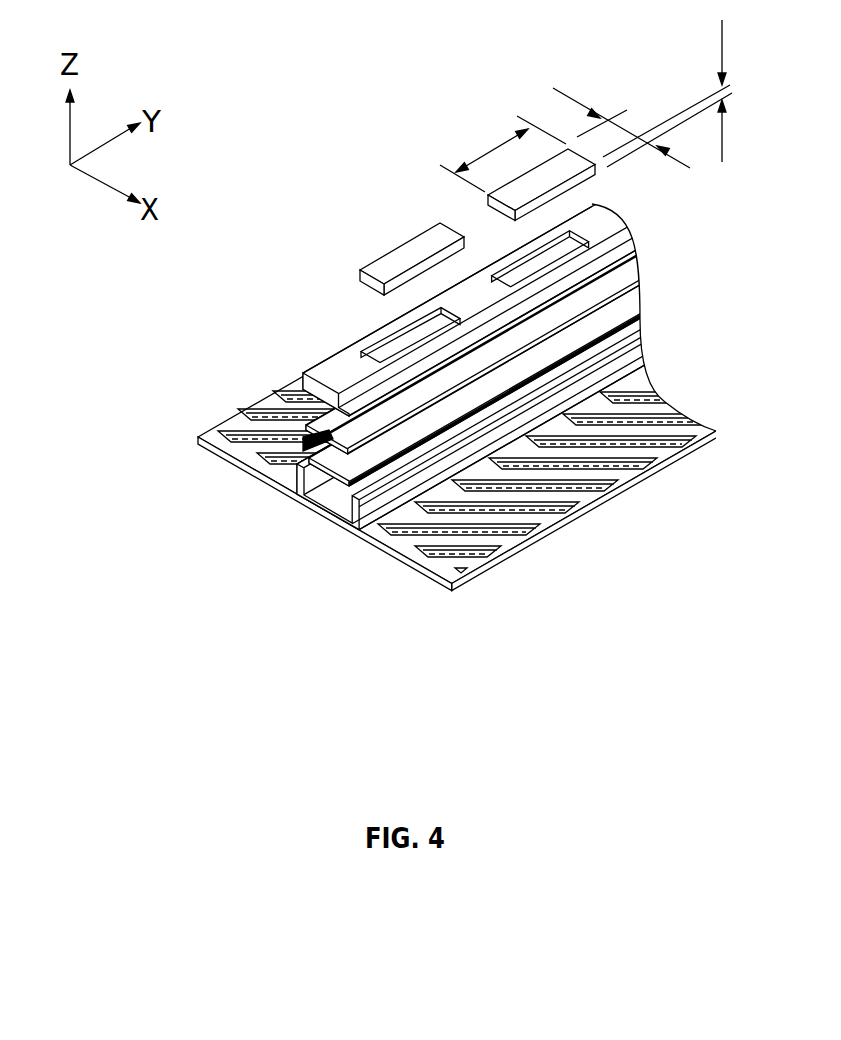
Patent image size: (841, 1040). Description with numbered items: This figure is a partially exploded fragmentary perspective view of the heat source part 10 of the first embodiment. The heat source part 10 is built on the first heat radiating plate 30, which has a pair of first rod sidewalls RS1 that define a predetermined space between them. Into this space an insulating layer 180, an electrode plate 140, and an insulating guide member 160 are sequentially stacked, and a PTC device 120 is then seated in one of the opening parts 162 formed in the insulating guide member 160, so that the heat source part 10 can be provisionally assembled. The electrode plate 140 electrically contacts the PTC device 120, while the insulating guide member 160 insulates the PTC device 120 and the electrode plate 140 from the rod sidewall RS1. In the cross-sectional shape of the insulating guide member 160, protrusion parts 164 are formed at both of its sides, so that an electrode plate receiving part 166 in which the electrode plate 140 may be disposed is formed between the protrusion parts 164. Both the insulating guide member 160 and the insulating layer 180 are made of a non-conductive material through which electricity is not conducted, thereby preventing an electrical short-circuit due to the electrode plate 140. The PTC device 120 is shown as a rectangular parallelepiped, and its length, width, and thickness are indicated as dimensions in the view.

The heat source part 10 is at (402, 138).
The first heat radiating plate 30 is at (451, 457).
The PTC device 120 is at (407, 252).
The electrode plate 140 is at (634, 257).
The insulating guide member 160 is at (551, 251).
The opening part 162 is at (413, 343).
The protrusion part 164 is at (305, 393).
The electrode plate receiving part 166 is at (253, 403).
The insulating layer 180 is at (525, 372).
The first rod sidewall RS1 is at (343, 523).